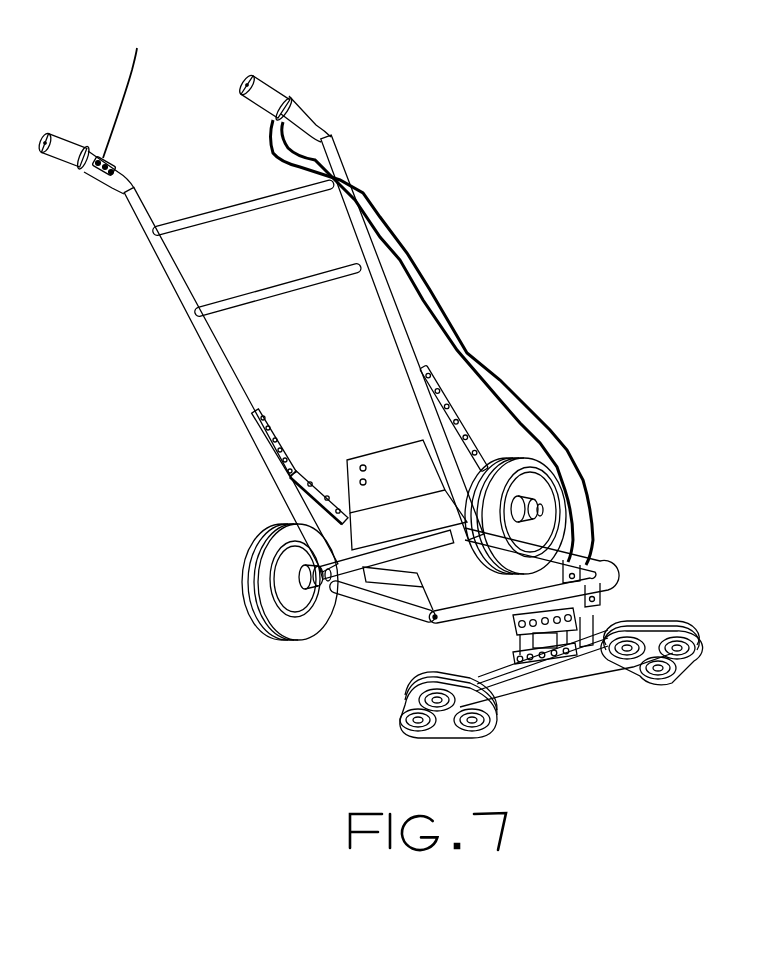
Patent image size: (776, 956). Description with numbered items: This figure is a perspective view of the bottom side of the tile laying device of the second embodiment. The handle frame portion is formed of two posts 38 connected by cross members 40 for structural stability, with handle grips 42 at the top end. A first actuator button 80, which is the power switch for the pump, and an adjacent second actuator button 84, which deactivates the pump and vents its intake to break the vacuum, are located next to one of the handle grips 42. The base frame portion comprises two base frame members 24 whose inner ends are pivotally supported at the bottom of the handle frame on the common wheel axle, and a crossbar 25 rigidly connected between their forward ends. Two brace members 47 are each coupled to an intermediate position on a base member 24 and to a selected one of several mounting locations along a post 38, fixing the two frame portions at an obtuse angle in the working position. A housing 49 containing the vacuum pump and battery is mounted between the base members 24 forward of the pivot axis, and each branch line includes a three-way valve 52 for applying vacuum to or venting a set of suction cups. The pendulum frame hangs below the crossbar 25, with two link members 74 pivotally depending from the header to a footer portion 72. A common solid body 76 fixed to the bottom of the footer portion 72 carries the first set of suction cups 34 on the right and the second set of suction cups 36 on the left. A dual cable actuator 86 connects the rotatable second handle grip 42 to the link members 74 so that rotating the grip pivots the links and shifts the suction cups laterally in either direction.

The base frame members 24 is at (377, 597).
The crossbar 25 is at (510, 597).
The first set of suction cups 34 is at (665, 695).
The second set of suction cups 36 is at (467, 740).
The posts 38 is at (213, 358).
The cross members 40 is at (176, 232).
The handle grips 42 is at (62, 137).
The brace members 47 is at (300, 463).
The housing 49 is at (370, 458).
The 3-way valve 52 is at (367, 482).
The footer portion 72 is at (577, 610).
The link members 74 is at (513, 630).
The solid body 76 is at (567, 684).
The first actuator button 80 is at (129, 84).
The second actuator button 84 is at (110, 163).
The dual cable actuator 86 is at (430, 315).